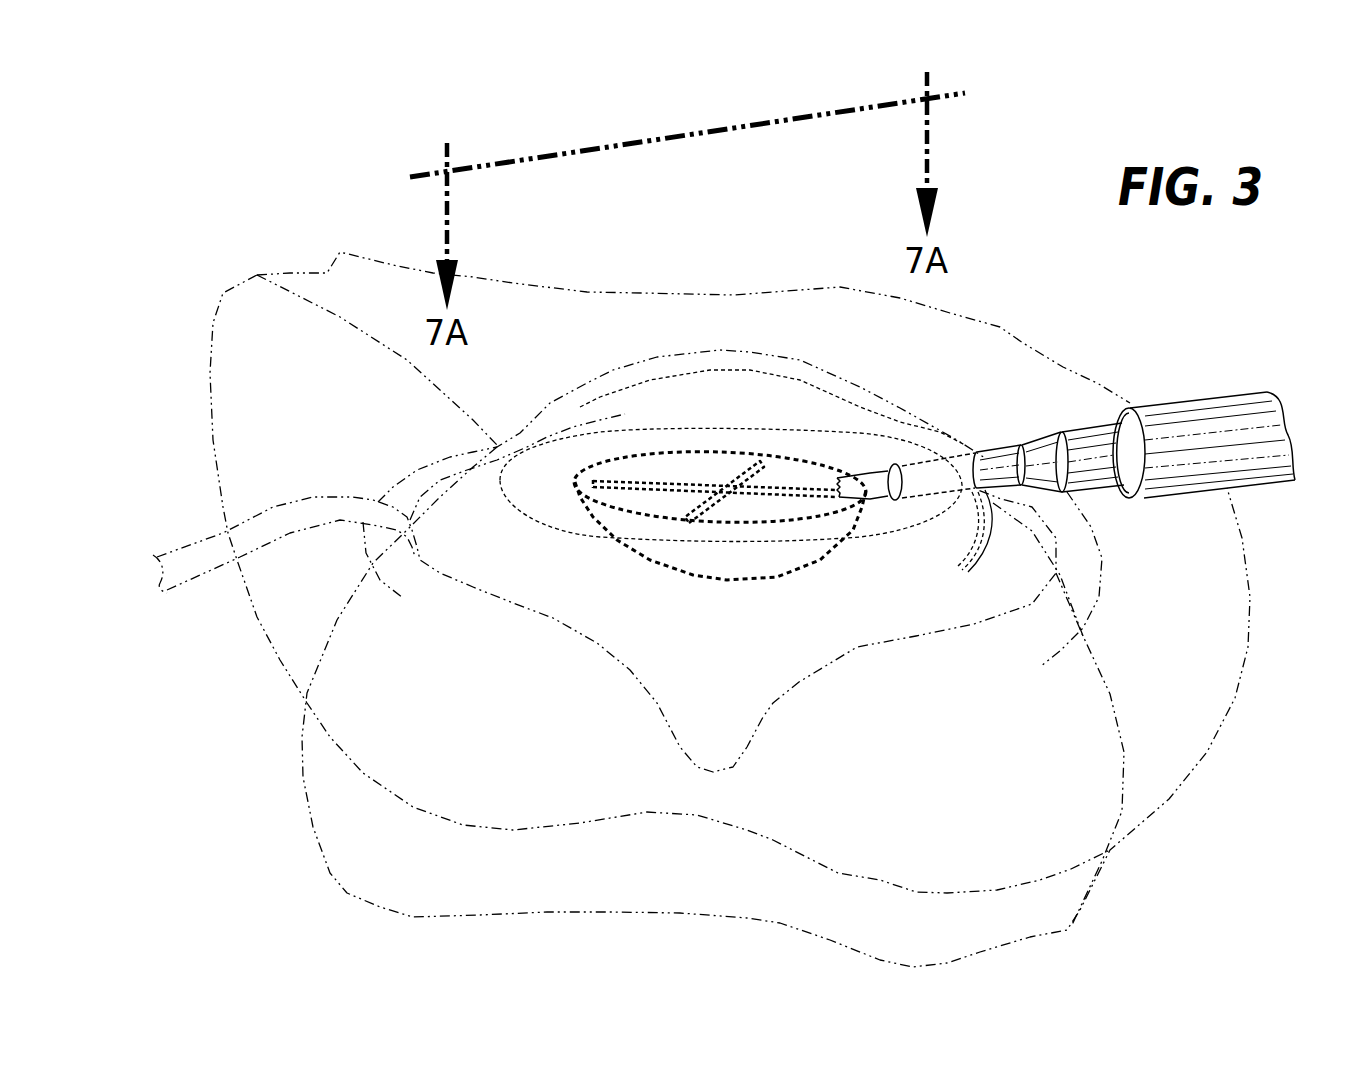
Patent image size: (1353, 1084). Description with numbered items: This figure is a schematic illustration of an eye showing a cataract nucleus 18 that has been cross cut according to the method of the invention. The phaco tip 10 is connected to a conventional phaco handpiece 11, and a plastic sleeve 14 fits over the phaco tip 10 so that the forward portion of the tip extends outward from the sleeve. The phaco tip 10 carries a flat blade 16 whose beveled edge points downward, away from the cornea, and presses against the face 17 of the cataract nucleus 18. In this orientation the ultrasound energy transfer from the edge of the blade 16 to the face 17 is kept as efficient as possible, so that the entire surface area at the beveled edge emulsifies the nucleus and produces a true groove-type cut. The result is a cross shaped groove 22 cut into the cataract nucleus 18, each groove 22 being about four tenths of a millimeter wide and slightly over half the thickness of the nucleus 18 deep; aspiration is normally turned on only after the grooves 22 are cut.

The phaco tip 10 is at (877, 440).
The phaco handpiece 11 is at (1090, 433).
The plastic sleeve 14 is at (1003, 452).
The blade 16 is at (828, 510).
The face 17 is at (716, 479).
The cataract nucleus 18 is at (700, 565).
The cross shaped groove 22 is at (640, 480).